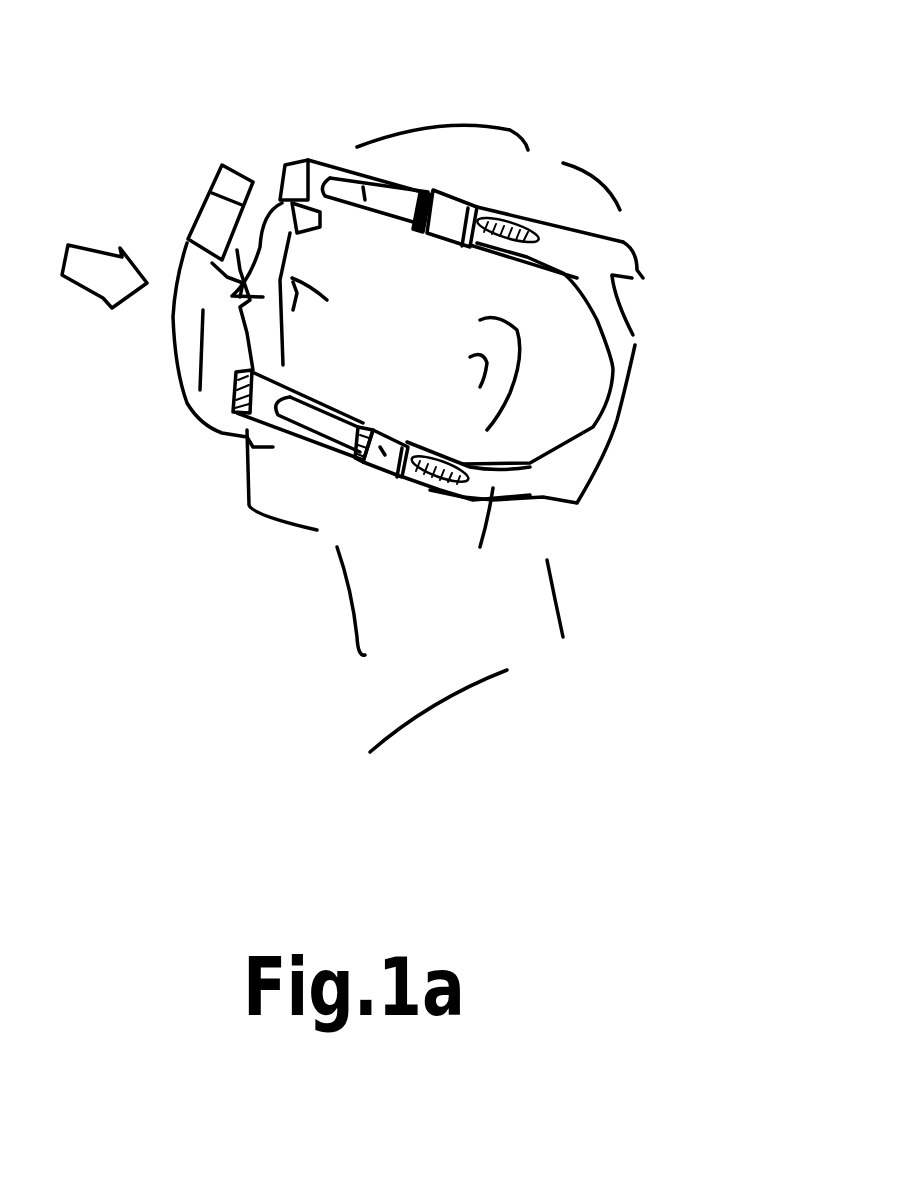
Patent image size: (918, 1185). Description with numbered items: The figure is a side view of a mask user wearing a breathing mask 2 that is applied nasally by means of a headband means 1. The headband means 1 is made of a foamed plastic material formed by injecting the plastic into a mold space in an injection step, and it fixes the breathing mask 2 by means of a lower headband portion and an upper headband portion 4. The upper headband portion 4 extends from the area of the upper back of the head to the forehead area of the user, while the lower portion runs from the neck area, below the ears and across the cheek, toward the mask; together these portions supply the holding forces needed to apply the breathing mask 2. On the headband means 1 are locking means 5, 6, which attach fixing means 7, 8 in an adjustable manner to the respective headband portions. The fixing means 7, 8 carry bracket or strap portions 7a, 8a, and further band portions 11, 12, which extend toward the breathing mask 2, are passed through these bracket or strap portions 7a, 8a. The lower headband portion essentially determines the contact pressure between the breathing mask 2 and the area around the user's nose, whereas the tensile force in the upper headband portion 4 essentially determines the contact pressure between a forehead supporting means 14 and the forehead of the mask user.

The headband means 1 is at (678, 240).
The breathing mask 2 is at (188, 338).
The upper headband portion 4 is at (570, 250).
The locking means 5 is at (433, 488).
The locking means 6 is at (512, 210).
The fixing means 7 is at (373, 467).
The bracket or strap portion 7a is at (362, 428).
The fixing means 8 is at (462, 187).
The bracket or strap portion 8a is at (413, 232).
The band portion 11 is at (317, 430).
The band portion 12 is at (360, 173).
The forehead supporting means 14 is at (302, 157).